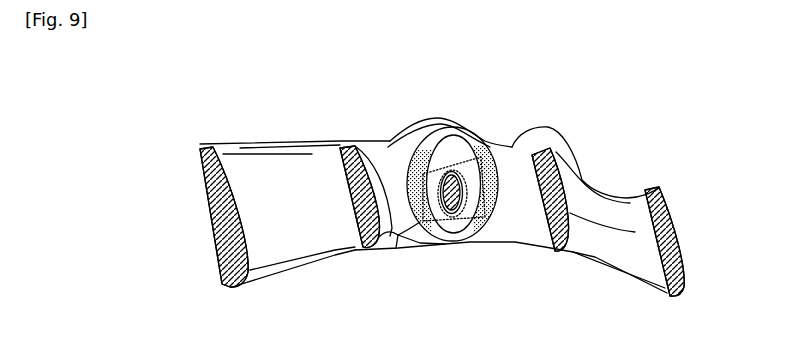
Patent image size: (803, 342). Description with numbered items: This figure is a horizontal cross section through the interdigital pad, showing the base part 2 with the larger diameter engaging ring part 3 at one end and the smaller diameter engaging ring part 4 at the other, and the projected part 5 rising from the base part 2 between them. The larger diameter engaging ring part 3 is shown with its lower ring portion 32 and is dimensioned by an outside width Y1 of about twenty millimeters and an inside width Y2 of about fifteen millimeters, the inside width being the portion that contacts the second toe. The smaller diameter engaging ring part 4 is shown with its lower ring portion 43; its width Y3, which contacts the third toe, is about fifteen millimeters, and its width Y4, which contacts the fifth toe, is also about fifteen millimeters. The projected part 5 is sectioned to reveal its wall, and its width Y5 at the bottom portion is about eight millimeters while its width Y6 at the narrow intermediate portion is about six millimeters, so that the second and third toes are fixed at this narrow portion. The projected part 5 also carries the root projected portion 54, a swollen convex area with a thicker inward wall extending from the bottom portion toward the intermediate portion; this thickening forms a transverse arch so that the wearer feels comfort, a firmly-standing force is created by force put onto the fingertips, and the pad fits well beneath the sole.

The base part 2 is at (402, 192).
The larger diameter engaging ring part 3 is at (222, 156).
The smaller diameter engaging ring part 4 is at (659, 188).
The projected part 5 is at (436, 163).
The lower ring portion 32 is at (293, 226).
The lower ring portion 43 is at (636, 229).
The root projected portion 54 is at (471, 152).
The outside width Y1 is at (202, 148).
The inside width Y2 is at (257, 258).
The width Y3 is at (592, 140).
The width Y4 is at (660, 183).
The width Y5 is at (485, 222).
The width Y6 is at (425, 137).